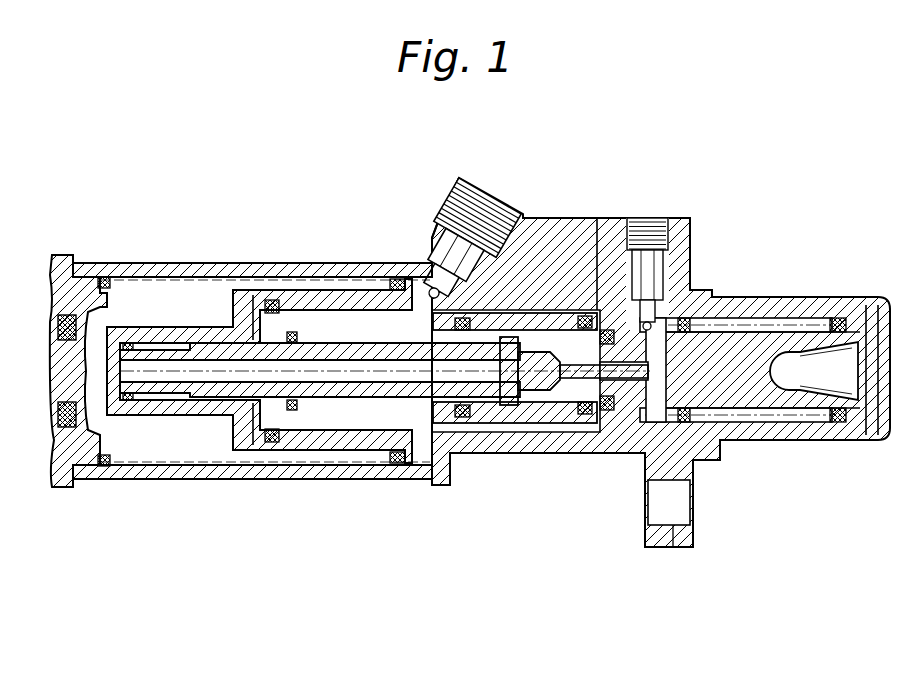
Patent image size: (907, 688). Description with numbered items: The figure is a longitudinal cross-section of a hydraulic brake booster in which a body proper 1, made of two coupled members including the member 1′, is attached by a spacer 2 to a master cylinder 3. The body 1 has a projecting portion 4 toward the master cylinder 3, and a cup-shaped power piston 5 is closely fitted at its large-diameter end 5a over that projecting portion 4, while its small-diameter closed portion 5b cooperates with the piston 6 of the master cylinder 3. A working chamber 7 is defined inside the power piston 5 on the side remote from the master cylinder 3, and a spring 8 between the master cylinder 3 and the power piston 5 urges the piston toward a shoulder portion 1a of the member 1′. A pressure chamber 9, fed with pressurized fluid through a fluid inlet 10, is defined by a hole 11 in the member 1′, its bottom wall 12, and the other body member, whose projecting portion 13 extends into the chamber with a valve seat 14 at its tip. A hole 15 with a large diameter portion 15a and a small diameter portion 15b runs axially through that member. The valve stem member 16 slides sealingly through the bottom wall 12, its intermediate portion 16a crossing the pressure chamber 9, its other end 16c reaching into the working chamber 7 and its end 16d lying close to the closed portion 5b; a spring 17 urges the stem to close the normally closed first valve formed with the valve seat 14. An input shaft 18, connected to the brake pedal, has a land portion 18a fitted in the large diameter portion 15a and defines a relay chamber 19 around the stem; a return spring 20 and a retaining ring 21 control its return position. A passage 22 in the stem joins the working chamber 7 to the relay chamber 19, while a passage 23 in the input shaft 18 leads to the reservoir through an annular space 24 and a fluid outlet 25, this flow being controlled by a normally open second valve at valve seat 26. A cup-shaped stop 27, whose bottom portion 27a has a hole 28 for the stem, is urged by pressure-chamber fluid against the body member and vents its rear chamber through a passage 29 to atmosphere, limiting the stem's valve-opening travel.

The body proper 1 is at (704, 137).
The shoulder portion 1a is at (436, 240).
The member 1′ is at (612, 258).
The spacer 2 is at (192, 268).
The master cylinder 3 is at (65, 262).
The projecting portion 4 is at (323, 296).
The power piston 5 is at (243, 300).
The one end of power piston 5a is at (370, 290).
The closed portion 5b is at (122, 327).
The piston 6 is at (90, 468).
The working chamber 7 is at (268, 302).
The spring 8 is at (109, 276).
The pressure chamber 9 is at (375, 420).
The fluid inlet 10 is at (483, 200).
The hole 11 is at (401, 422).
The bottom wall 12 is at (292, 432).
The projecting portion 13 is at (518, 404).
The valve seat 14 is at (480, 404).
The hole 15 is at (636, 598).
The large diameter portion 15a is at (672, 470).
The small diameter portion 15b is at (632, 470).
The valve stem member 16 is at (322, 402).
The intermediate portion 16a is at (419, 440).
The other end of valve stem member 16c is at (214, 384).
The end of valve stem member 16d is at (150, 386).
The spring 17 is at (253, 400).
The input shaft 18 is at (757, 337).
The land portion 18a is at (845, 424).
The relay chamber 19 is at (547, 240).
The return spring 20 is at (831, 318).
The retaining ring 21 is at (877, 318).
The passage 22 is at (346, 382).
The passage 23 is at (552, 392).
The annular space 24 is at (713, 318).
The fluid outlet 25 is at (646, 222).
The valve seat 26 is at (542, 392).
The cup-shaped stop 27 is at (500, 312).
The bottom portion 27a is at (432, 324).
The hole 28 is at (447, 428).
The passage 29 is at (605, 420).